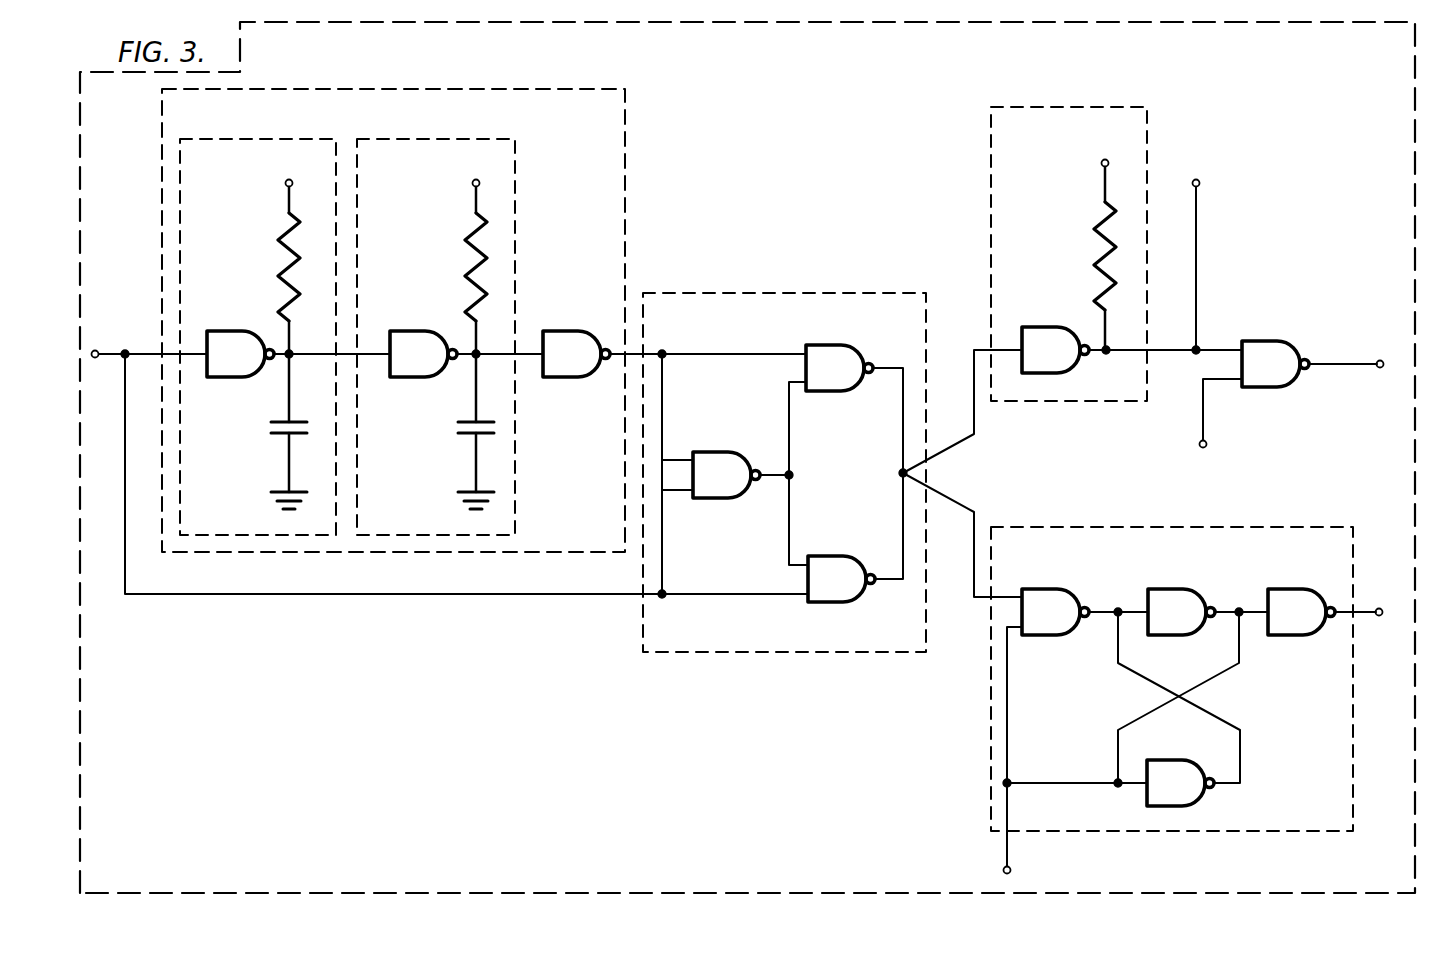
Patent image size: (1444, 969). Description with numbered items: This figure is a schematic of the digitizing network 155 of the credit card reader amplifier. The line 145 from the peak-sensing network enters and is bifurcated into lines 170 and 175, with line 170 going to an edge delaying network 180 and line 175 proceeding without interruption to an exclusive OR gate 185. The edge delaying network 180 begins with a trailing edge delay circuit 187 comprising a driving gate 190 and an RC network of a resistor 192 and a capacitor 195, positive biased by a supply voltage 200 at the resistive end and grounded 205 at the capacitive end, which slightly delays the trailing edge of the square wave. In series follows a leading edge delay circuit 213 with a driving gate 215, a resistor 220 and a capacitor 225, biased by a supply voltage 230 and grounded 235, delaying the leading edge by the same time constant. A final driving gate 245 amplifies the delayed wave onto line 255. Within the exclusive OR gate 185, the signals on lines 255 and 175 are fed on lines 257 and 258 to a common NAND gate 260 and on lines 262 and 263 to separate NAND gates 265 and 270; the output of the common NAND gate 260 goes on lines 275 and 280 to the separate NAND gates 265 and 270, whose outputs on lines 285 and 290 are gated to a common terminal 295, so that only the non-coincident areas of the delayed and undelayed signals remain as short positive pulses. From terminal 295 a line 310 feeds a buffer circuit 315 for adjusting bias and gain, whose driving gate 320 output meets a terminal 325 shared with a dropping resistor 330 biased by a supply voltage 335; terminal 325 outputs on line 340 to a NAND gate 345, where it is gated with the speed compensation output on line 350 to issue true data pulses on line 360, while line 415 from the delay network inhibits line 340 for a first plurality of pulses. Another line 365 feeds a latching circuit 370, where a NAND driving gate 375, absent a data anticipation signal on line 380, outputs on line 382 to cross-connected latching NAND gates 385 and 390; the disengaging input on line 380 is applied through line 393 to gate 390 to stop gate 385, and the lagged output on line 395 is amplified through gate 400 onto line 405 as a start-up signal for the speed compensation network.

The line 145 is at (108, 352).
The digitizing network 155 is at (1415, 88).
The line 170 is at (136, 352).
The line 175 is at (272, 596).
The edge delaying network 180 is at (360, 88).
The exclusive OR gate 185 is at (740, 293).
The trailing edge delay circuit 187 is at (230, 139).
The driving gate 190 is at (246, 372).
The resistor 192 is at (287, 265).
The capacitor 195 is at (275, 428).
The supply voltage 200 is at (287, 183).
The ground 205 is at (274, 505).
The leading edge delay circuit 213 is at (400, 139).
The driving gate 215 is at (429, 372).
The resistor 220 is at (474, 265).
The capacitor 225 is at (462, 428).
The supply voltage 230 is at (474, 183).
The ground 235 is at (458, 505).
The final driving gate 245 is at (583, 372).
The line 255 is at (630, 352).
The line 257 is at (663, 422).
The line 258 is at (663, 545).
The common NAND gate 260 is at (733, 493).
The line 262 is at (697, 356).
The line 263 is at (757, 592).
The separate NAND gate 265 is at (846, 386).
The separate NAND gate 270 is at (848, 597).
The line 275 is at (790, 445).
The line 280 is at (790, 525).
The line 285 is at (903, 400).
The line 290 is at (903, 540).
The common terminal 295 is at (901, 473).
The line 310 is at (972, 370).
The buffer circuit 315 is at (1020, 107).
The driving gate 320 is at (1063, 368).
The terminal 325 is at (1107, 354).
The dropping resistor 330 is at (1103, 230).
The supply voltage 335 is at (1103, 163).
The line 340 is at (1218, 349).
The NAND gate 345 is at (1283, 384).
The line 350 is at (1204, 420).
The line 360 is at (1343, 360).
The line 365 is at (975, 590).
The latching circuit 370 is at (1140, 527).
The NAND driving gate 375 is at (1063, 630).
The line 380 is at (1005, 855).
The line 382 is at (1117, 608).
The latching NAND gate 385 is at (1188, 630).
The latching NAND gate 390 is at (1188, 801).
The line 393 is at (1072, 742).
The line 395 is at (1240, 608).
The gate 400 is at (1310, 630).
The line 405 is at (1378, 609).
The line 415 is at (1197, 215).